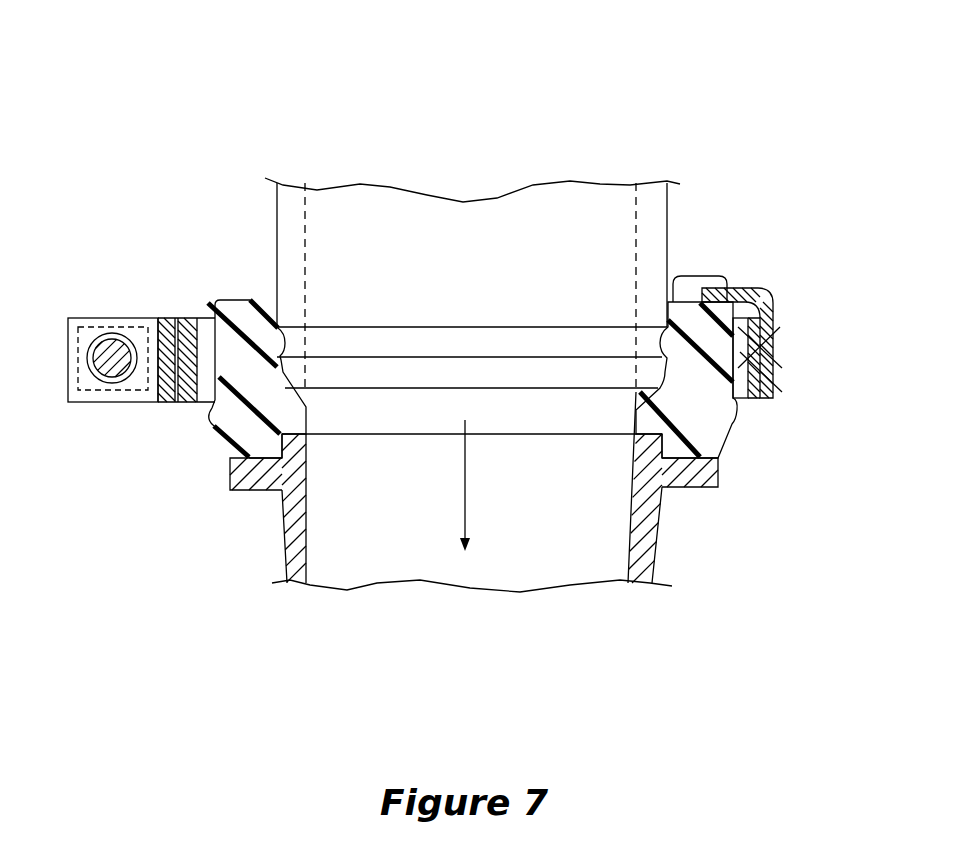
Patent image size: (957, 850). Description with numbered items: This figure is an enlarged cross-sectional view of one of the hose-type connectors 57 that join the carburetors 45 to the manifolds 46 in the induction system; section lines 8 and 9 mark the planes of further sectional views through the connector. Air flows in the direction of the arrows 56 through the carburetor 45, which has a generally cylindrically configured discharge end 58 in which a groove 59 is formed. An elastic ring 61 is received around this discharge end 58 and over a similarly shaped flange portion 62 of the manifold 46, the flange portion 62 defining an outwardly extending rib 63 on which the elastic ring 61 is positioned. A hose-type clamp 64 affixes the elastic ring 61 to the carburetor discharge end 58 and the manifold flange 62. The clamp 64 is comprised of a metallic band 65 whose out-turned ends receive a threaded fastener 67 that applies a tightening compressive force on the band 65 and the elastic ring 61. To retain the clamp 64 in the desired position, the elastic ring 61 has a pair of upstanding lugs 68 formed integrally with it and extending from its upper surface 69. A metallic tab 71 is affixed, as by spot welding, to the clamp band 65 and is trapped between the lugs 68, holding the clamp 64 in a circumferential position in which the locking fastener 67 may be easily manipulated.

The section line 8- 8 is at (92, 50).
The section line 9- 9 is at (832, 202).
The carburetor 45 is at (371, 192).
The manifold 46 is at (282, 538).
The arrows 56 is at (470, 488).
The hose-type connector 57 is at (169, 165).
The discharge end 58 is at (502, 218).
The groove 59 is at (377, 333).
The elastic ring 61 is at (225, 450).
The flange portion 62 is at (248, 470).
The rib 63 is at (720, 468).
The hose-type clamp 64 is at (146, 308).
The band 65 is at (165, 323).
The threaded fastener 67 is at (103, 343).
The upstanding lugs 68 is at (685, 283).
The upper surface 69 is at (703, 280).
The metallic tab 71 is at (768, 292).